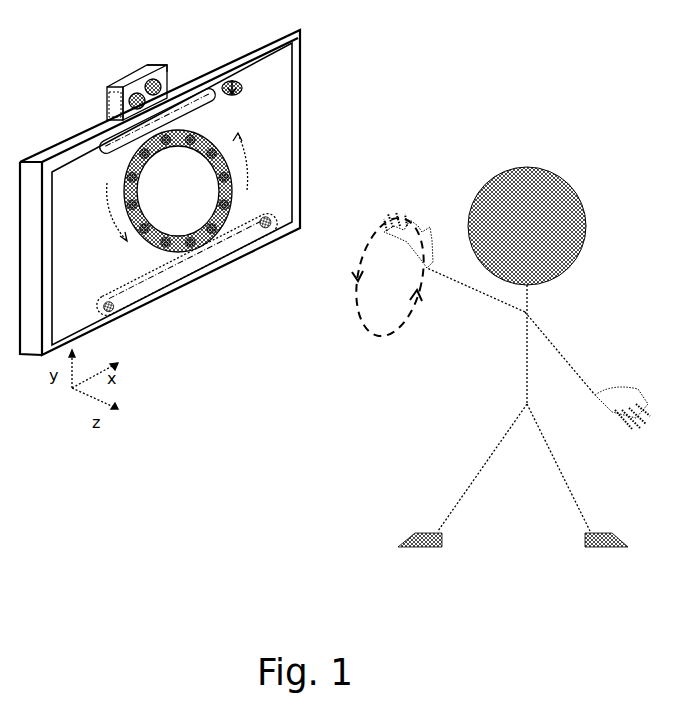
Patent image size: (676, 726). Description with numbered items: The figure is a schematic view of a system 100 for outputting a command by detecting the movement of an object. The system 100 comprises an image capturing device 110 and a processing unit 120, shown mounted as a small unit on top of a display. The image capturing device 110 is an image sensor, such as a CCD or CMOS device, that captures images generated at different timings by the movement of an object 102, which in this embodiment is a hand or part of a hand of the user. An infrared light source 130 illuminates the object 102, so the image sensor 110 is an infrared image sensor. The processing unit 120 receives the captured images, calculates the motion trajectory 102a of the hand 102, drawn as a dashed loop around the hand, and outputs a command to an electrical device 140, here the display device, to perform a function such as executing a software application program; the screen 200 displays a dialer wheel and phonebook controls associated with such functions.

The system 100 is at (335, 288).
The object 102 is at (428, 236).
The motion trajectory 102a is at (360, 304).
The image capturing device 110 is at (104, 77).
The processing unit 120 is at (105, 98).
The infrared light source 130 is at (168, 76).
The electrical device 140 is at (302, 128).
The display screen 200 is at (209, 192).